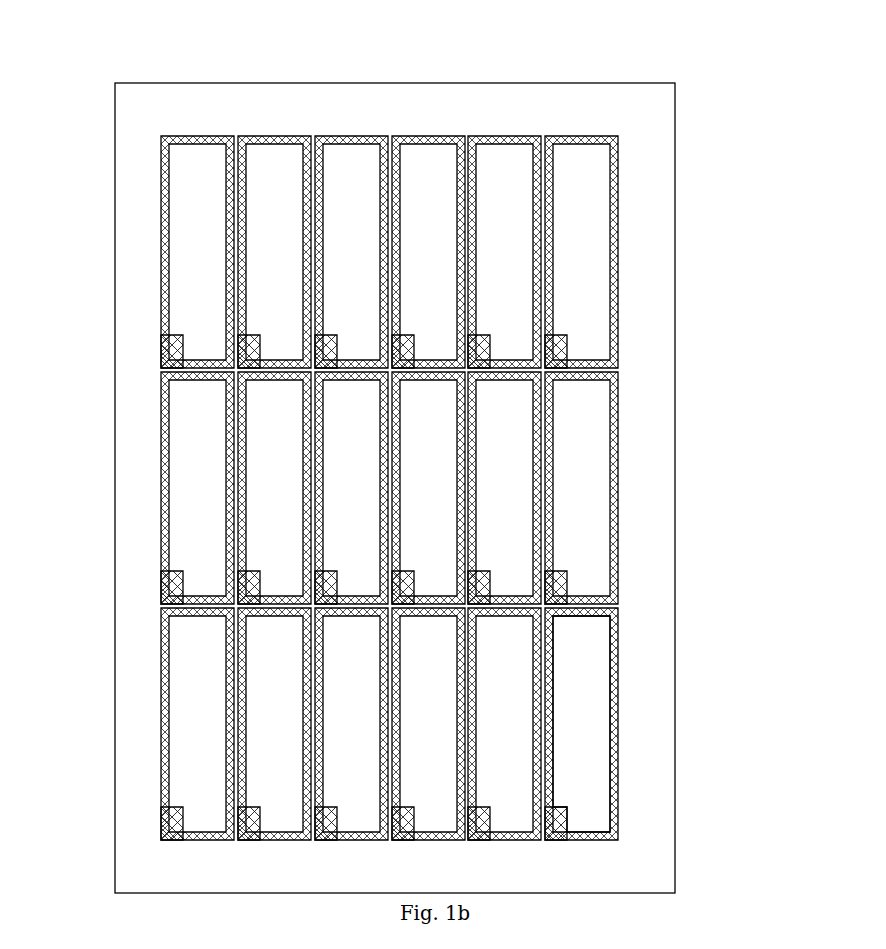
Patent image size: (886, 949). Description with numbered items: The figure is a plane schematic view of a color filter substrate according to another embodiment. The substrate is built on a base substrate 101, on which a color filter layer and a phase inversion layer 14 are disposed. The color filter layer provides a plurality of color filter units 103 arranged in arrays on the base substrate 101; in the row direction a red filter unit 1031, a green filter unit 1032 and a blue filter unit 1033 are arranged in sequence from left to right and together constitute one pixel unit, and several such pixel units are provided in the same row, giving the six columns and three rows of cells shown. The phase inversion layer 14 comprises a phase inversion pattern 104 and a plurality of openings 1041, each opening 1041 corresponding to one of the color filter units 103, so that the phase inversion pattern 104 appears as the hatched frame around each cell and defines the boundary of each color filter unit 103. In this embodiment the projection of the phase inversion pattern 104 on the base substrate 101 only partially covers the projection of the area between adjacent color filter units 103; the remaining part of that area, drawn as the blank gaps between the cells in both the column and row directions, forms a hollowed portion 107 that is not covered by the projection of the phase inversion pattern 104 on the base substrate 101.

The base substrate 101 is at (440, 488).
The hollowed portion 107 is at (58, 369).
The color filter unit 103 is at (498, 420).
The red filter unit 1031 is at (486, 184).
The green filter unit 1032 is at (557, 194).
The blue filter unit 1033 is at (634, 205).
The phase inversion pattern 104 is at (655, 724).
The opening 1041 is at (770, 676).
The phase inversion layer 14 is at (690, 697).